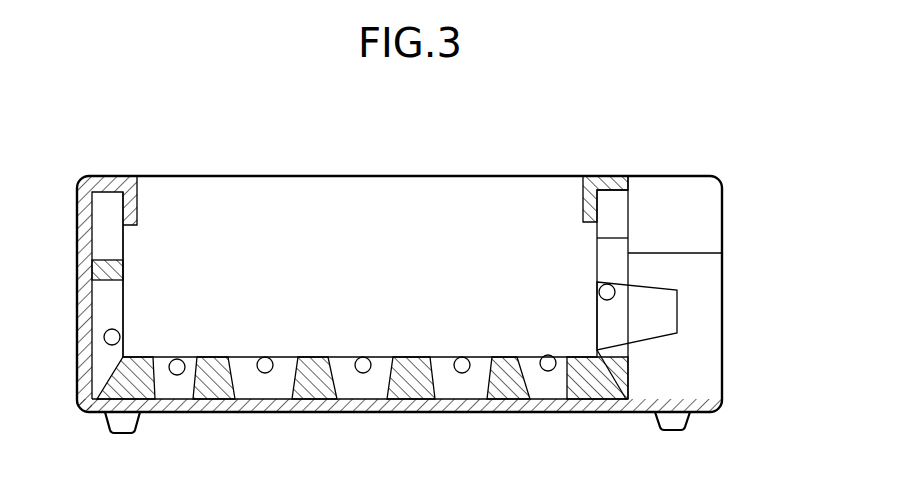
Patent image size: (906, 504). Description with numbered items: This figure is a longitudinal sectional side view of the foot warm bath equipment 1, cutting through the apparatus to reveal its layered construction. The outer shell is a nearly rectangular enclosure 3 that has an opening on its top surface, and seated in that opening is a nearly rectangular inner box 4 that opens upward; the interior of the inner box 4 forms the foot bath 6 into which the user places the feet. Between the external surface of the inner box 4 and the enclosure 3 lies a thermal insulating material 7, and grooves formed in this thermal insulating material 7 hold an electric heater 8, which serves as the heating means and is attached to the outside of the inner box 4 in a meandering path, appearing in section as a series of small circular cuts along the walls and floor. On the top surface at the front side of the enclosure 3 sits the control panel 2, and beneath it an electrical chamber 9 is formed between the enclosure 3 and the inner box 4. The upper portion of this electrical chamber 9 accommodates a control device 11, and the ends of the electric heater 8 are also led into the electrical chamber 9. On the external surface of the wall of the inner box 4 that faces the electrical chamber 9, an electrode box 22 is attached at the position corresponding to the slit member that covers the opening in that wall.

The foot warm bath equipment 1 is at (389, 175).
The control panel 2 is at (670, 176).
The enclosure 3 is at (83, 179).
The inner box 4 is at (125, 297).
The foot bath 6 is at (353, 260).
The thermal insulating material 7 is at (291, 377).
The electric heater 8 is at (104, 336).
The electrical chamber 9 is at (686, 283).
The control device 11 is at (705, 210).
The electrode box 22 is at (677, 318).